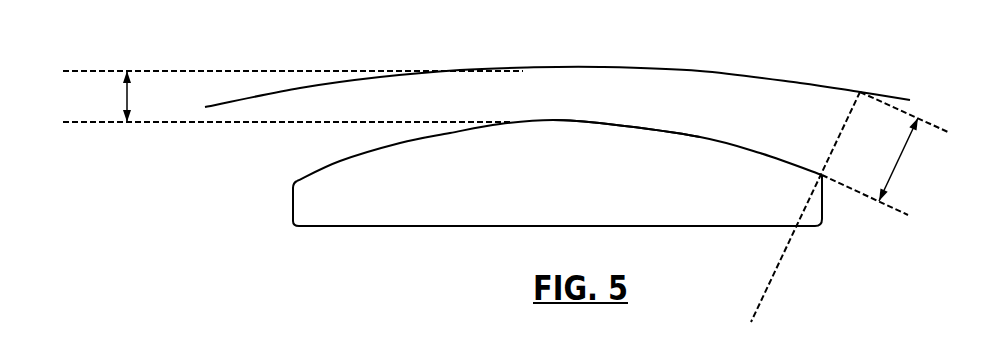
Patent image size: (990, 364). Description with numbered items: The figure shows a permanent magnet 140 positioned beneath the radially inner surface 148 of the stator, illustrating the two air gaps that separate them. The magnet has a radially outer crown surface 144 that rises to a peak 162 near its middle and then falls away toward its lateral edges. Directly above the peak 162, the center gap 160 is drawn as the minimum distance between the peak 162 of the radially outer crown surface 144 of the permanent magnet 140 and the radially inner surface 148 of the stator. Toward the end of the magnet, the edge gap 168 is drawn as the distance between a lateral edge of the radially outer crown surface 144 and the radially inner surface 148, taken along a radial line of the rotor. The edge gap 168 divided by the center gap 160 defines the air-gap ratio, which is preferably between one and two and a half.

The permanent magnet 140 is at (520, 192).
The radially outer crown surface 144 is at (437, 135).
The radially inner surface 148 is at (567, 67).
The center gap 160 is at (123, 103).
The peak 162 is at (608, 125).
The edge gap 168 is at (903, 161).